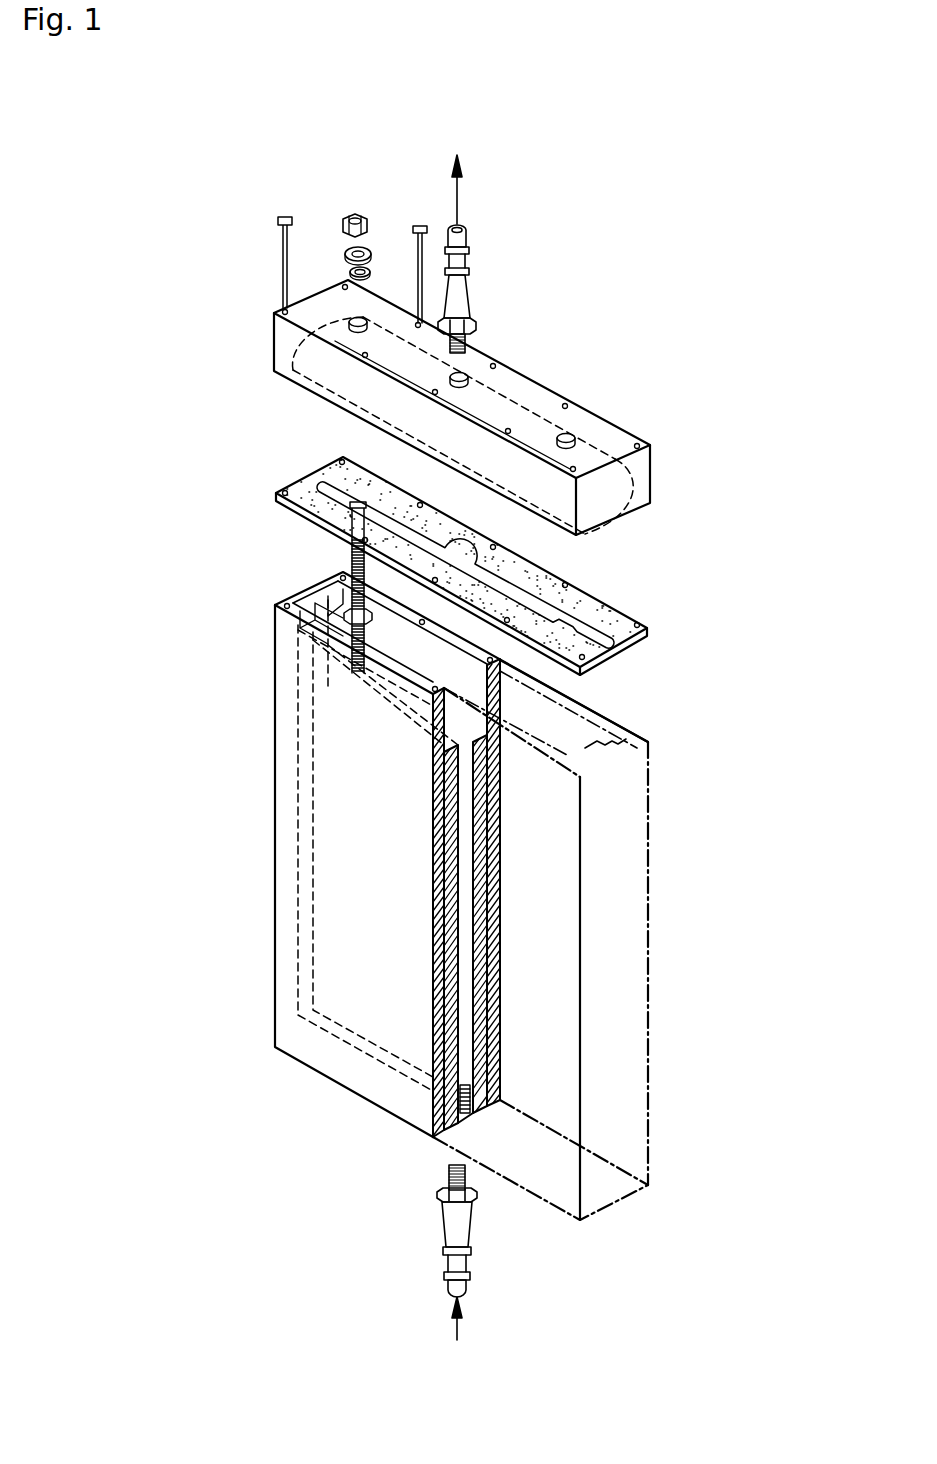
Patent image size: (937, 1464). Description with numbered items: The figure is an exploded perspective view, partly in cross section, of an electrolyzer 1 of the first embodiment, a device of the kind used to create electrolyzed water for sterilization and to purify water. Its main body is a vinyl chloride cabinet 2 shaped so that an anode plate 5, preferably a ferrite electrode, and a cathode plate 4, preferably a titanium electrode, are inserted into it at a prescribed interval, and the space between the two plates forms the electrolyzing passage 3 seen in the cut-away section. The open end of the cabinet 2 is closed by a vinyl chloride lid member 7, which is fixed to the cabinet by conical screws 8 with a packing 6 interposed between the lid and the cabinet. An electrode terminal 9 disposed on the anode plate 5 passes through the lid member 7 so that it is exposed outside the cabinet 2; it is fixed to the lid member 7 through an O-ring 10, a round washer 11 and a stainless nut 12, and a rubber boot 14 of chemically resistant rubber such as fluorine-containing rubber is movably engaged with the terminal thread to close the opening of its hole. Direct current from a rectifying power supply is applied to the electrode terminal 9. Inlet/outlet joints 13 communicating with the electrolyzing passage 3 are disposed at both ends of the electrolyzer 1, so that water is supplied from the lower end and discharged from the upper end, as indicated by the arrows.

The electrolyzer 1 is at (158, 555).
The cabinet 2 is at (285, 998).
The electrolyzing passage 3 is at (463, 1047).
The cathode plate 4 is at (455, 940).
The anode plate 5 is at (480, 882).
The packing 6 is at (630, 615).
The lid member 7 is at (643, 478).
The conical screws 8 is at (280, 263).
The electrode terminal 9 is at (350, 568).
The O-ring 10 is at (368, 268).
The round washer 11 is at (347, 252).
The stainless nut 12 is at (362, 214).
The inlet/outlet joints 13 is at (463, 297).
The rubber boot 14 is at (345, 678).